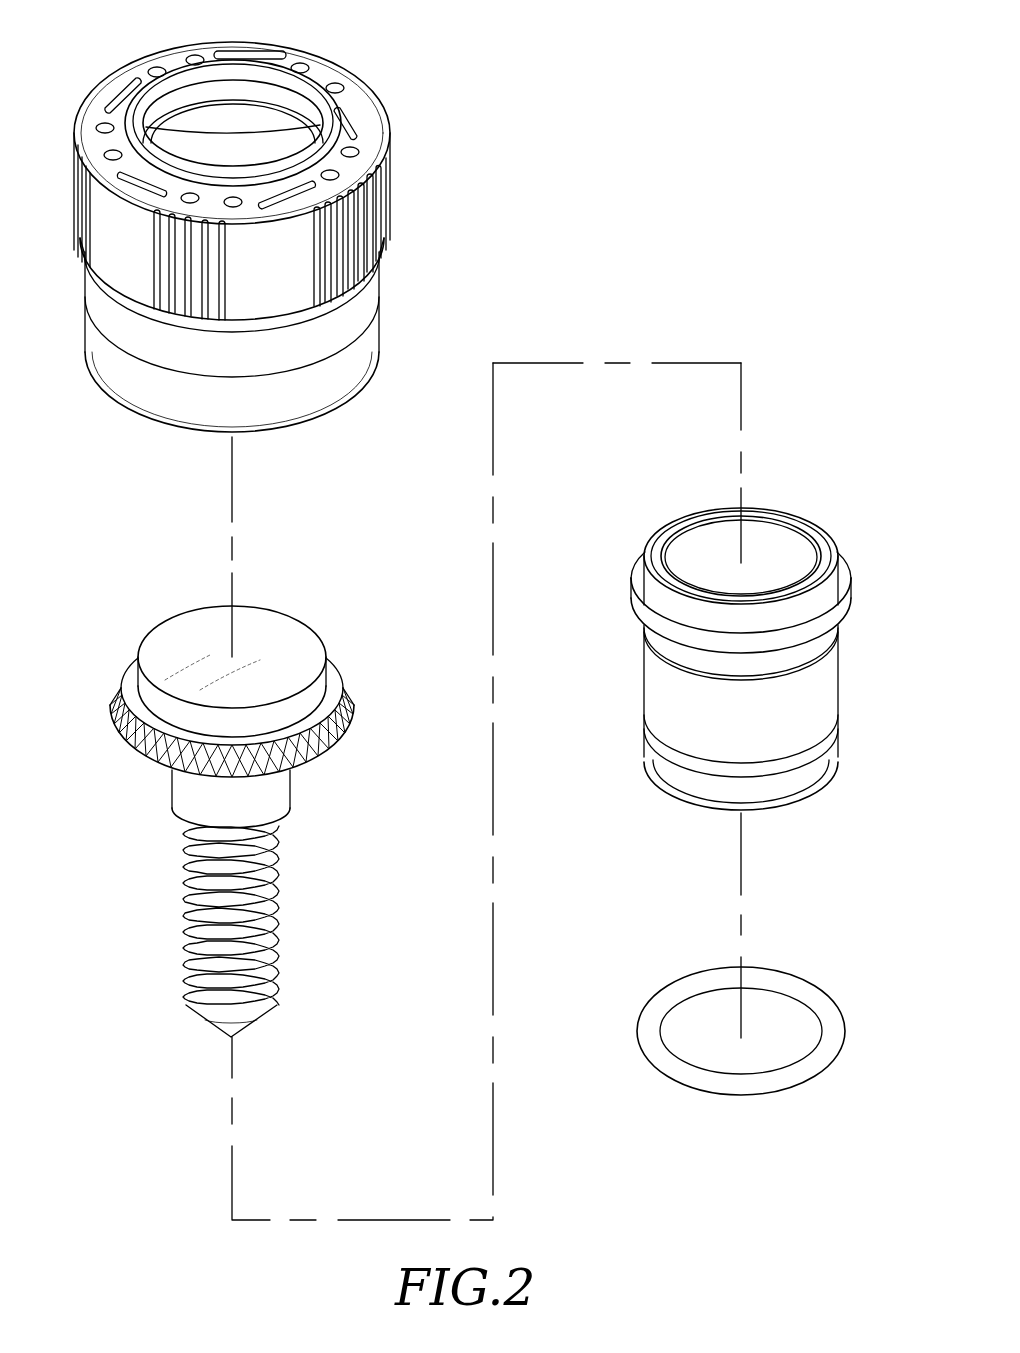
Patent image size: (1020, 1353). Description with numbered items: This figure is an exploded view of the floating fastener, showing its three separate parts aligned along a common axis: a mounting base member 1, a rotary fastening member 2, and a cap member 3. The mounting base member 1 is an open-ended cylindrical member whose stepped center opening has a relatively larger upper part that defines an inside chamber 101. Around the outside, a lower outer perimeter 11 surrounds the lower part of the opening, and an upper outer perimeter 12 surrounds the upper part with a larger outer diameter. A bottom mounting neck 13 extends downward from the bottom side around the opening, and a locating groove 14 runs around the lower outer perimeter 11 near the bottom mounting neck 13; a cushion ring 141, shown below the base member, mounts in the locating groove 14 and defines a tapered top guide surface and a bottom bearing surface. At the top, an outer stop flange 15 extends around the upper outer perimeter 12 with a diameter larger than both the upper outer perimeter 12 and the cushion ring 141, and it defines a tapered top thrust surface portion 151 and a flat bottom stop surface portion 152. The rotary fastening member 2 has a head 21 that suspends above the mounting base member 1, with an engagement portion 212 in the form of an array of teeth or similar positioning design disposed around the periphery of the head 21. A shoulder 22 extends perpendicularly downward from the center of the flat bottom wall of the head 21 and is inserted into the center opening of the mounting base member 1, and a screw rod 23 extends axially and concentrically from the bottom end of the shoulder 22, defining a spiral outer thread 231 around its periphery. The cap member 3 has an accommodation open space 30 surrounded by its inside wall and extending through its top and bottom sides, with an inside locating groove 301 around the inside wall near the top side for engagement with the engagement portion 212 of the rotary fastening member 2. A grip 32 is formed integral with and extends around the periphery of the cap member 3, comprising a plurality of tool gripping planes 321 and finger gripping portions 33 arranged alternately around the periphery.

The mounting base member 1 is at (716, 661).
The inside chamber 101 is at (770, 562).
The lower outer perimeter 11 is at (737, 715).
The upper outer perimeter 12 is at (673, 658).
The bottom mounting neck 13 is at (715, 810).
The locating groove 14 is at (785, 765).
The cushion ring 141 is at (780, 985).
The outer stop flange 15 is at (700, 576).
The tapered top thrust surface portion 151 is at (640, 590).
The flat bottom stop surface portion 152 is at (645, 634).
The rotary fastening member 2 is at (269, 810).
The head 21 is at (267, 625).
The engagement portion 212 is at (350, 737).
The shoulder 22 is at (275, 795).
The screw rod 23 is at (280, 931).
The spiral outer thread 231 is at (257, 927).
The cap member 3 is at (326, 216).
The accommodation open space 30 is at (246, 93).
The inside locating groove 301 is at (190, 103).
The grip 32 is at (496, 183).
The tool gripping planes 321 is at (383, 195).
The finger gripping portions 33 is at (357, 250).